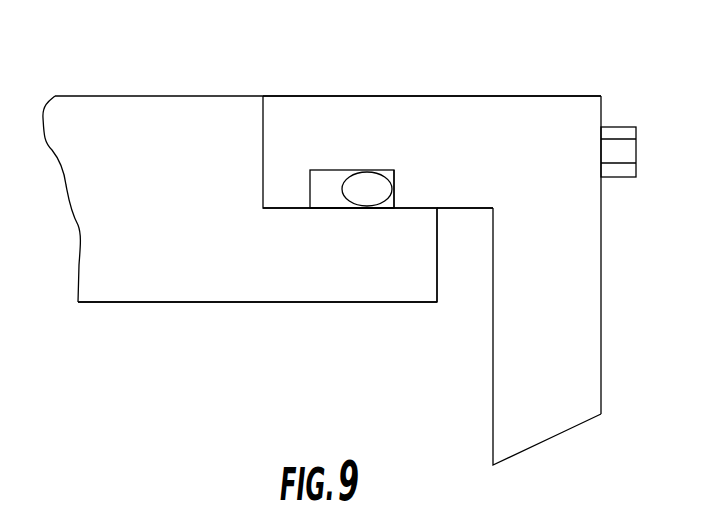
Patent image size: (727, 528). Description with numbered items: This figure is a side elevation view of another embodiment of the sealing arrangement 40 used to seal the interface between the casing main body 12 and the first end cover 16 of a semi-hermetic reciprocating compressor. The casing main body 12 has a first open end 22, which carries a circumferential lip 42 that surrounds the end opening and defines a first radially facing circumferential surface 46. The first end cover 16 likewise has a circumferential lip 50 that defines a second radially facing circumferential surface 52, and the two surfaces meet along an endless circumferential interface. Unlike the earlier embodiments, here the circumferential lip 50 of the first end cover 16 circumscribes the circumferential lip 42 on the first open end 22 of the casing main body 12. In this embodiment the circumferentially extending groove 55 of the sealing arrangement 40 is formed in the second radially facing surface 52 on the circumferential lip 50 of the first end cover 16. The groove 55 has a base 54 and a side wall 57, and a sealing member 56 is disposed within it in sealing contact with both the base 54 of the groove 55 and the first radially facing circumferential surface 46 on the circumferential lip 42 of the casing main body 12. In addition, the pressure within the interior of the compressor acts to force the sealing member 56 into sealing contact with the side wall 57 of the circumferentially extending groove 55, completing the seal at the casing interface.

The casing main body 12 is at (192, 96).
The first end cover 16 is at (602, 235).
The first open end 22 is at (170, 302).
The sealing arrangement 40 is at (379, 122).
The circumferential lip 42 is at (418, 302).
The first radially facing circumferential surface 46 is at (415, 208).
The circumferential lip 50 is at (342, 96).
The second radially facing circumferential surface 52 is at (463, 209).
The base 54 is at (383, 173).
The circumferentially extending groove 55 is at (323, 182).
The sealing member 56 is at (364, 195).
The side wall 57 is at (397, 197).